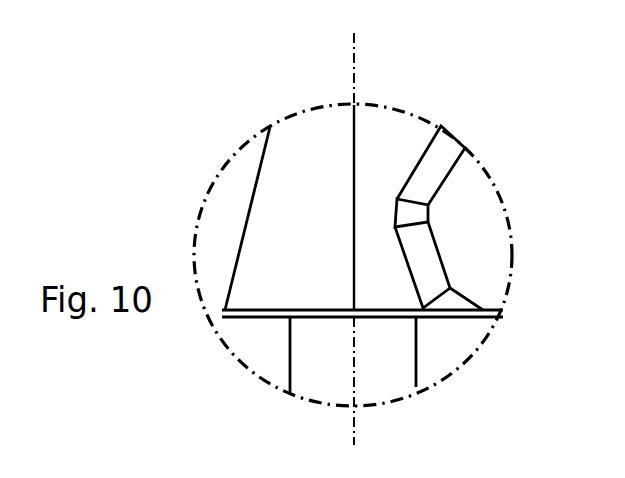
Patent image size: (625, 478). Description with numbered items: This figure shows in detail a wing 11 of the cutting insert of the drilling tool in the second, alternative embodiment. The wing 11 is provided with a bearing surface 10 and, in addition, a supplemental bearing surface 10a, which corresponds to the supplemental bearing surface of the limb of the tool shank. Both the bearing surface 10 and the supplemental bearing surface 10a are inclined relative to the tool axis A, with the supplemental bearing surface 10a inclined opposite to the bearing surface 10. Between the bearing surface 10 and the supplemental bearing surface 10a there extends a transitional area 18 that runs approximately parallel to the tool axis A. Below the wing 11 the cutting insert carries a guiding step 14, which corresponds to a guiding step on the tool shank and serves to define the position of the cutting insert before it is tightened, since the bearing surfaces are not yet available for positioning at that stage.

The tool axis A is at (354, 60).
The bearing surface 10 is at (422, 166).
The supplemental bearing surface 10a is at (418, 256).
The wing 11 is at (497, 255).
The guiding step 14 is at (255, 318).
The transitional area 18 is at (420, 212).